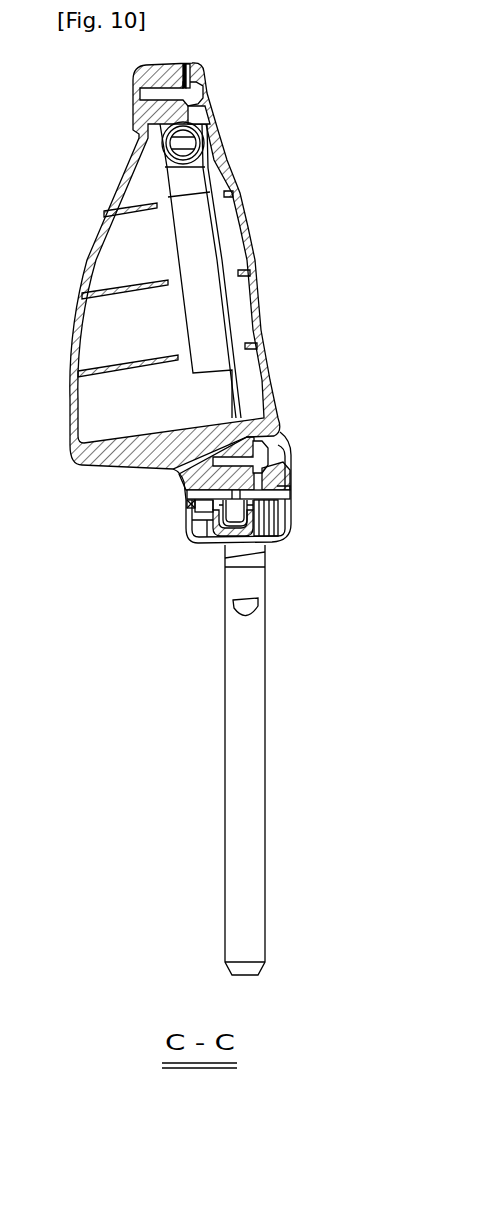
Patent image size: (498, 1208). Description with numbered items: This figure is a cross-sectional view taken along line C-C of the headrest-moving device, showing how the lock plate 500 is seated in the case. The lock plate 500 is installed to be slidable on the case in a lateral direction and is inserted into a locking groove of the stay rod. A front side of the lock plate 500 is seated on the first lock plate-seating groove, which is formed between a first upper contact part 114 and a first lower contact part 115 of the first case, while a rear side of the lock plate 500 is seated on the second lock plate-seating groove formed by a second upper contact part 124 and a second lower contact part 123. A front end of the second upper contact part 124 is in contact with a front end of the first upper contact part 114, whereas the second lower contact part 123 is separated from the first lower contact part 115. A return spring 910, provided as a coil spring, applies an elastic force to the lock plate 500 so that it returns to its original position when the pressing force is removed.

The first upper contact part 114 is at (210, 497).
The first lower contact part 115 is at (207, 520).
The second lower contact part 123 is at (280, 516).
The second upper contact part 124 is at (268, 473).
The lock plate 500 is at (192, 507).
The return spring 910 is at (273, 538).